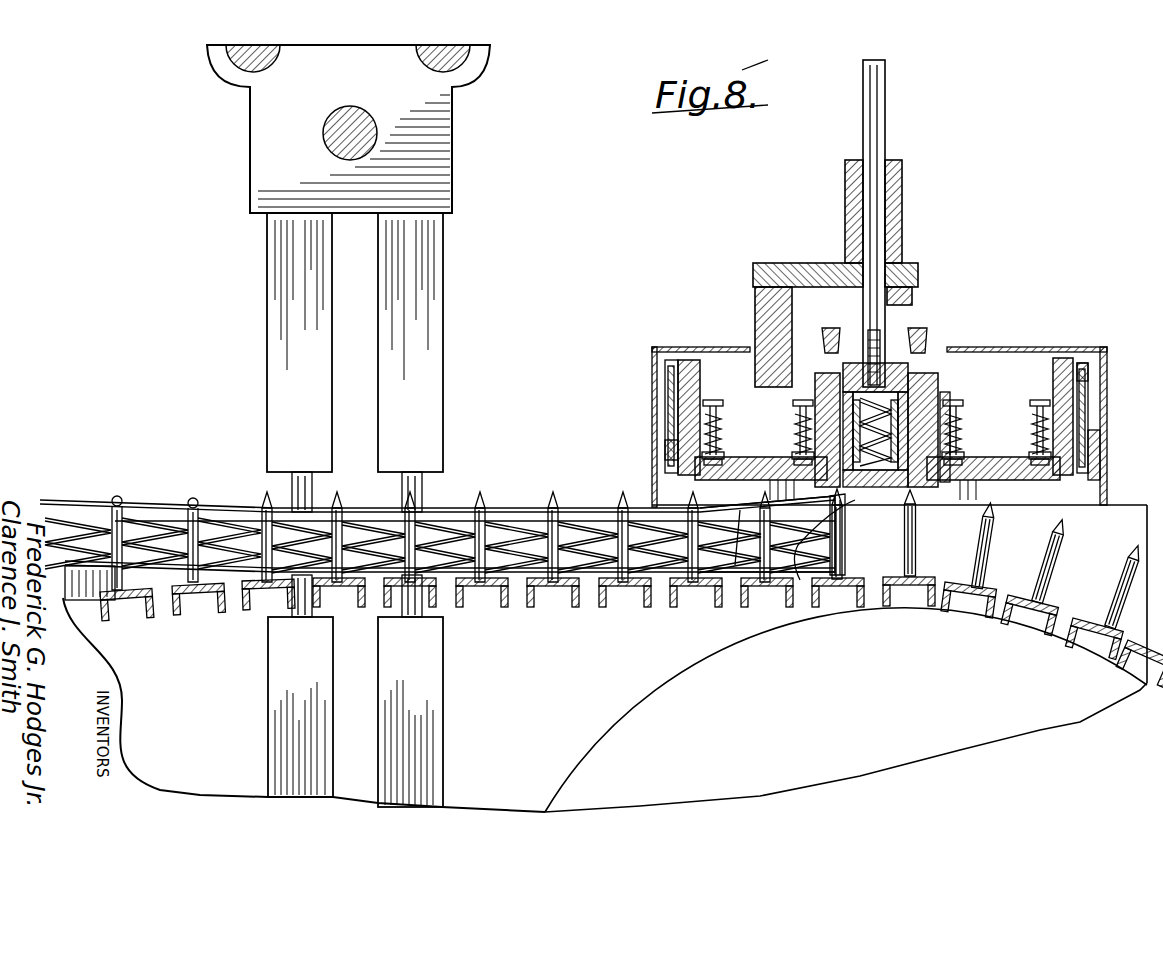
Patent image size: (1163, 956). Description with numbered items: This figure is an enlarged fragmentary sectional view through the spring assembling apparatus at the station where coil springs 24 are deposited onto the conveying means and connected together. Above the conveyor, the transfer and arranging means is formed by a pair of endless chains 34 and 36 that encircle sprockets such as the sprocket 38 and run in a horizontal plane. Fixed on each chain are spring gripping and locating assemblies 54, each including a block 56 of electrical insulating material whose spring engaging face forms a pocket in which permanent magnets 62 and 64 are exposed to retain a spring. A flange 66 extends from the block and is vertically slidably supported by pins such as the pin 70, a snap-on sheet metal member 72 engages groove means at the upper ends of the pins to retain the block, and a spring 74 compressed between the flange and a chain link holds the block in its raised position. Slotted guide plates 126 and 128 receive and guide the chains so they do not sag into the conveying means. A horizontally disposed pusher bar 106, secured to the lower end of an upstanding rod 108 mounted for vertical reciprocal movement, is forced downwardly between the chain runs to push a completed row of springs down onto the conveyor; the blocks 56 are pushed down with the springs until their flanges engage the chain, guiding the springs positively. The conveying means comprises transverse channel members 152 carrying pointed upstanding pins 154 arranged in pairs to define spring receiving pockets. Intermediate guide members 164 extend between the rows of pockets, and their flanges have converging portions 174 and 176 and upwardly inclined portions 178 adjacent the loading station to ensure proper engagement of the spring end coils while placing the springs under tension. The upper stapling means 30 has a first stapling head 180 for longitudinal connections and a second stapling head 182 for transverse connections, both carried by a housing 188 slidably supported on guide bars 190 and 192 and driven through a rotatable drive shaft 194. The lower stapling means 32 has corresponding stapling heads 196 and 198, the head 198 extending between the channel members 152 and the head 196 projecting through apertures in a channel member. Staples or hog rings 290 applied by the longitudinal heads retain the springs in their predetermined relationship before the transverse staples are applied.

The coil springs 24 is at (462, 478).
The upper stapling means 30 is at (350, 278).
The lower stapling means 32 is at (347, 691).
The conveyor chain 34 is at (1045, 485).
The conveyor chain 36 is at (727, 521).
The sprocket 38 is at (442, 478).
The spring gripping and locating assembly 54 is at (705, 378).
The block 56 is at (690, 358).
The permanent magnet 62 is at (662, 428).
The permanent magnet 64 is at (660, 382).
The flange 66 is at (970, 478).
The pin 70 is at (972, 480).
The snap-on elongated sheet metal member 72 is at (1000, 380).
The spring 74 is at (1090, 420).
The pusher bar 106 is at (915, 340).
The upstanding rod 108 is at (880, 135).
The slotted guide plate 126 is at (990, 455).
The slotted guide plate 128 is at (820, 395).
The channel member 152 is at (690, 590).
The upstanding pin 154 is at (553, 496).
The intermediate guide member 164 is at (590, 504).
The converging portion 174 is at (800, 580).
The converging portion 176 is at (735, 565).
The upwardly inclined portion 178 is at (740, 470).
The first stapling head 180 is at (445, 340).
The second stapling head 182 is at (262, 374).
The housing 188 is at (432, 117).
The guide bar 190 is at (440, 65).
The guide bar 192 is at (250, 68).
The rotatable drive shaft 194 is at (345, 133).
The stapling head 196 is at (444, 768).
The stapling head 198 is at (268, 741).
The staples or hog rings 290 is at (193, 499).